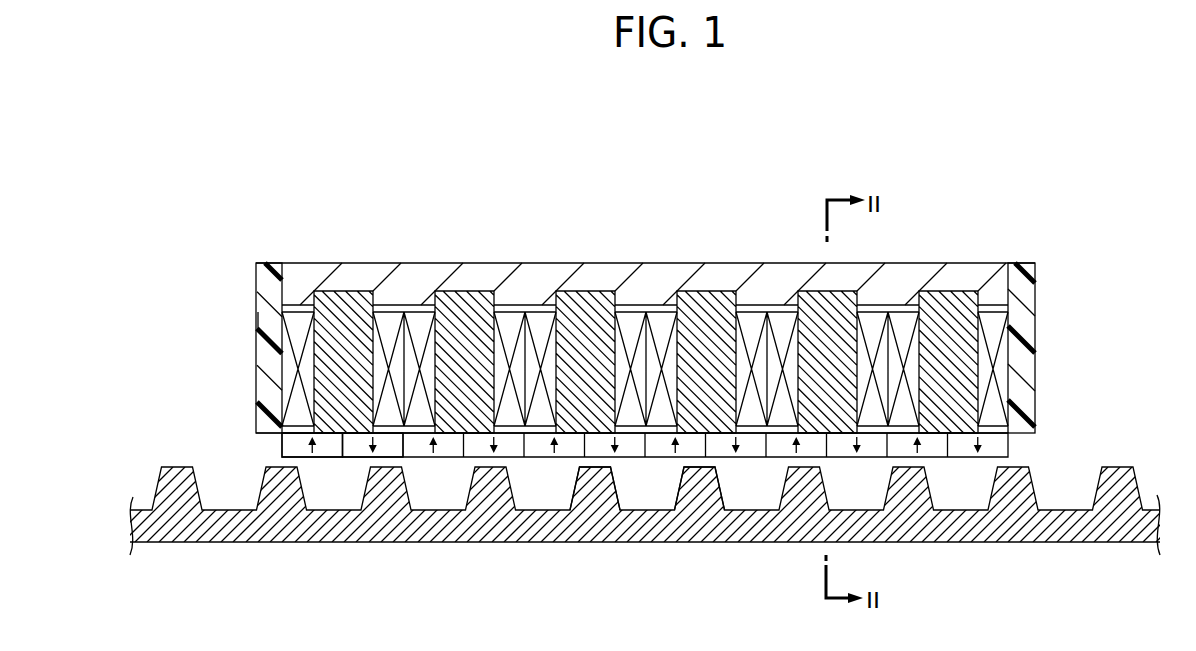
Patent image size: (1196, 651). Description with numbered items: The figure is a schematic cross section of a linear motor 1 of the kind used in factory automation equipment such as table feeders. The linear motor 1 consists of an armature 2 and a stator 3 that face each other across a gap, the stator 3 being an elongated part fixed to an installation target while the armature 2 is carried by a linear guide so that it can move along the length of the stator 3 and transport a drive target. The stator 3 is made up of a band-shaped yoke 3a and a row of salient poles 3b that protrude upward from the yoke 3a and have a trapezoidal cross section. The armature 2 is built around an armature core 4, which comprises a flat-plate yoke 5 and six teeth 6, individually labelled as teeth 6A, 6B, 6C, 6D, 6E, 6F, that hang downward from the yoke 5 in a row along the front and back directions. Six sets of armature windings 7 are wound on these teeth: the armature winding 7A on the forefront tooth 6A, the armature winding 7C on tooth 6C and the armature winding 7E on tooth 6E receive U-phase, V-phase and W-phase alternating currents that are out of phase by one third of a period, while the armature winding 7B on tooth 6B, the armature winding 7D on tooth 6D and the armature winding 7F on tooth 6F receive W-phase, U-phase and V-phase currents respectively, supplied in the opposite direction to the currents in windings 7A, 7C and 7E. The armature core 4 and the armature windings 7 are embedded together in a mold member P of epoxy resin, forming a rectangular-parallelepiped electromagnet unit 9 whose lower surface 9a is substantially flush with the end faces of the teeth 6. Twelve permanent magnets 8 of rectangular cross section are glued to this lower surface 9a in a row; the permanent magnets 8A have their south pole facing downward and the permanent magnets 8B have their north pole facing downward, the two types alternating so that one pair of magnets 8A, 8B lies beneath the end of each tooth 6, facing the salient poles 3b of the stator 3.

The linear motor 1 is at (1182, 191).
The armature 2 is at (1040, 251).
The stator 3 is at (1116, 446).
The yoke 3a is at (968, 533).
The salient poles 3b is at (605, 482).
The armature core 4 is at (306, 254).
The yoke 5 is at (300, 276).
The teeth 6 is at (643, 303).
The tooth 6A is at (333, 304).
The tooth 6B is at (453, 304).
The tooth 6C is at (574, 304).
The tooth 6D is at (695, 304).
The tooth 6E is at (816, 304).
The tooth 6F is at (938, 304).
The armature windings 7 is at (689, 322).
The armature winding 7A is at (388, 327).
The armature winding 7B is at (505, 327).
The armature winding 7C is at (626, 327).
The armature winding 7D is at (747, 327).
The armature winding 7E is at (868, 330).
The armature winding 7F is at (990, 327).
The permanent magnets 8 is at (645, 513).
The permanent magnet 8A is at (332, 447).
The permanent magnet 8B is at (388, 447).
The electromagnet unit 9 is at (244, 351).
The lower surface 9a is at (262, 434).
The mold member P is at (260, 322).